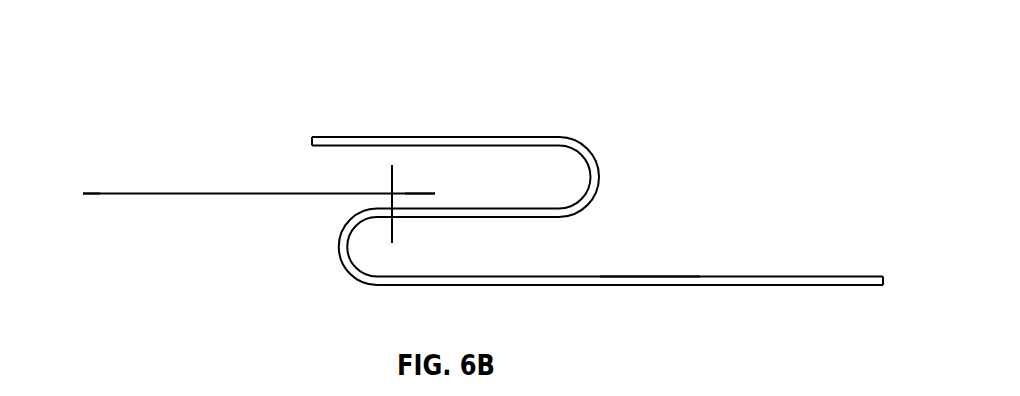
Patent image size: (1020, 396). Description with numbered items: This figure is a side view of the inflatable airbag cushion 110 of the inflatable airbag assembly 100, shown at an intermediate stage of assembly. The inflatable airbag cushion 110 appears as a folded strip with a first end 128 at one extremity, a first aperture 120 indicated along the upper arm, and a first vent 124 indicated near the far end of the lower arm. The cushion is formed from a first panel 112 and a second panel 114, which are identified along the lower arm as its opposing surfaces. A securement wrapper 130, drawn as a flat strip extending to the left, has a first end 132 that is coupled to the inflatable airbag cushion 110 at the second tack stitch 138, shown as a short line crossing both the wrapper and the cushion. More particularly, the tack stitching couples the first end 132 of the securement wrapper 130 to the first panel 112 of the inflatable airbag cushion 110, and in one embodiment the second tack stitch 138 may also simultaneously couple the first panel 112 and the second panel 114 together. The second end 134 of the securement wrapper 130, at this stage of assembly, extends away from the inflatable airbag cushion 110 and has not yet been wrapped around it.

The inflatable airbag assembly 100 is at (248, 77).
The inflatable airbag cushion 110 is at (688, 277).
The first panel 112 is at (612, 277).
The second panel 114 is at (612, 287).
The first aperture 120 is at (443, 135).
The first vent 124 is at (817, 275).
The first end 128 is at (350, 137).
The securement wrapper 130 is at (187, 191).
The first end 132 is at (417, 193).
The second end 134 is at (128, 196).
The second tack stitch 138 is at (392, 222).